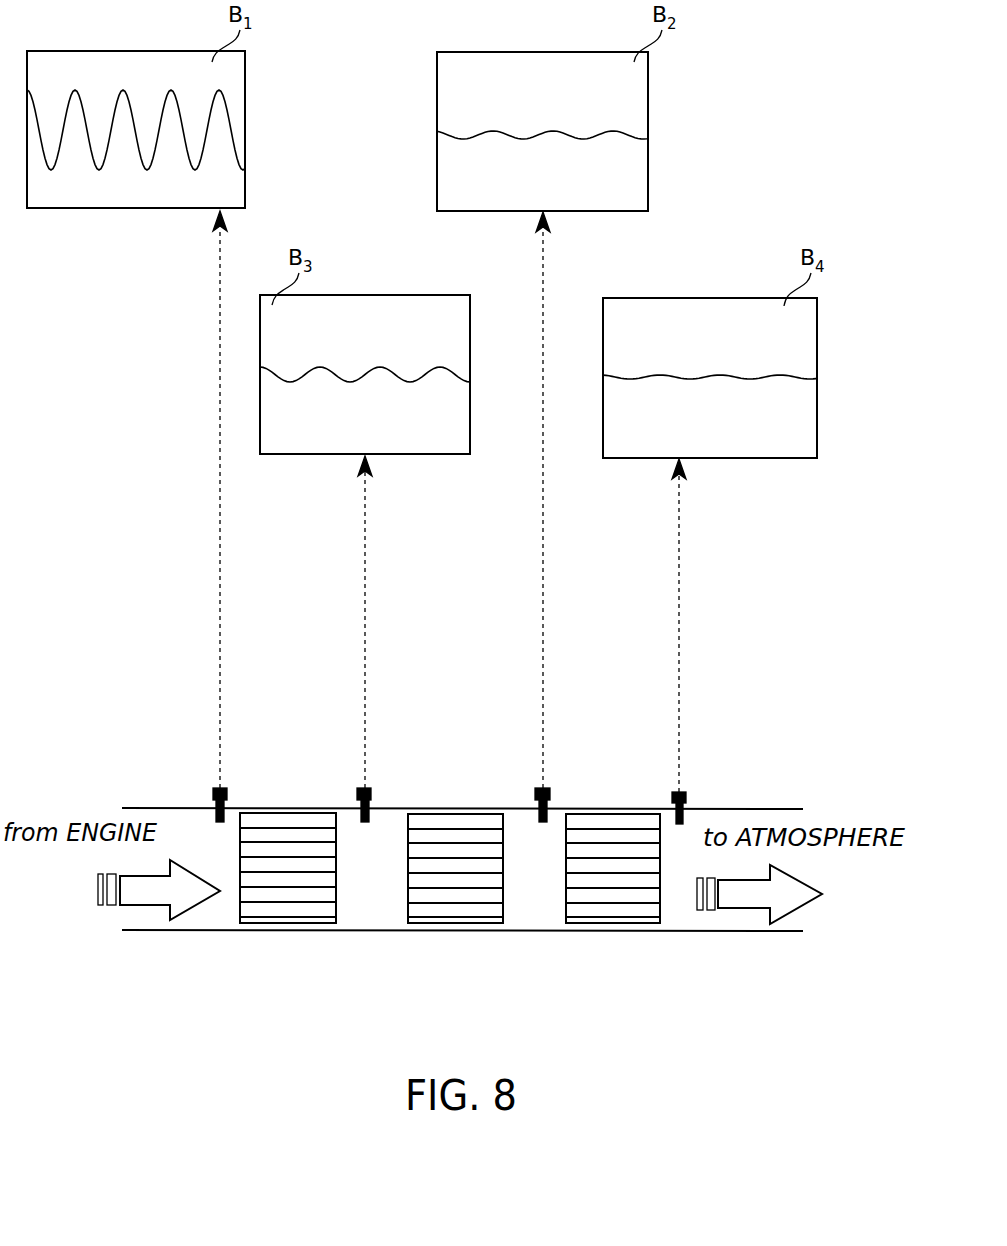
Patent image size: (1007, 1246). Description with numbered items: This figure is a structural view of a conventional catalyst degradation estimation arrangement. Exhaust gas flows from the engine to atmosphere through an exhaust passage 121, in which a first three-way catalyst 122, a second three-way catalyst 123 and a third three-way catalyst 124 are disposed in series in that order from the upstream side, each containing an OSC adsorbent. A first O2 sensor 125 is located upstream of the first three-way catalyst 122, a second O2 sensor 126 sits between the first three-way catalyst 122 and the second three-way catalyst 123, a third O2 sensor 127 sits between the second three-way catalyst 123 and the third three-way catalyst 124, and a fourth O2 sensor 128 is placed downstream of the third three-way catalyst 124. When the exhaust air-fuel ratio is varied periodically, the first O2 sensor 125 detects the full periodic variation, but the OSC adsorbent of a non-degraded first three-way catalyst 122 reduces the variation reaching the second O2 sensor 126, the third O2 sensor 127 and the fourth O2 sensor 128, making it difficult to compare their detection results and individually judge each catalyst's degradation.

The exhaust passage 121 is at (205, 925).
The first three-way catalyst 122 is at (302, 921).
The second three-way catalyst 123 is at (460, 919).
The third three-way catalyst 124 is at (615, 919).
The first O2 sensor 125 is at (228, 786).
The second O2 sensor 126 is at (372, 786).
The third O2 sensor 127 is at (551, 786).
The fourth O2 sensor 128 is at (686, 790).